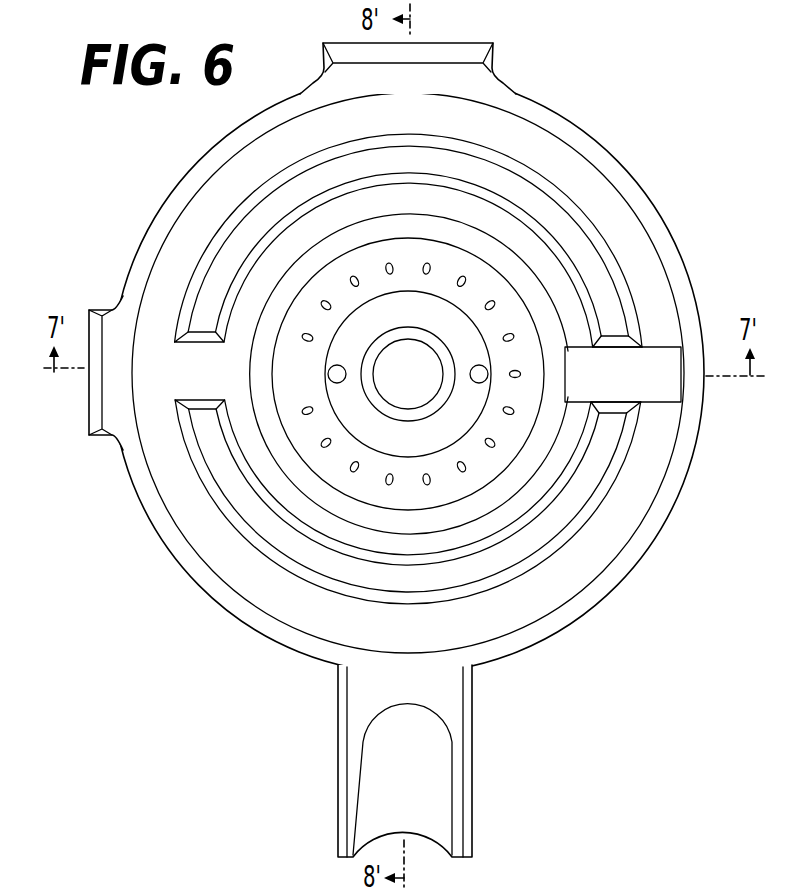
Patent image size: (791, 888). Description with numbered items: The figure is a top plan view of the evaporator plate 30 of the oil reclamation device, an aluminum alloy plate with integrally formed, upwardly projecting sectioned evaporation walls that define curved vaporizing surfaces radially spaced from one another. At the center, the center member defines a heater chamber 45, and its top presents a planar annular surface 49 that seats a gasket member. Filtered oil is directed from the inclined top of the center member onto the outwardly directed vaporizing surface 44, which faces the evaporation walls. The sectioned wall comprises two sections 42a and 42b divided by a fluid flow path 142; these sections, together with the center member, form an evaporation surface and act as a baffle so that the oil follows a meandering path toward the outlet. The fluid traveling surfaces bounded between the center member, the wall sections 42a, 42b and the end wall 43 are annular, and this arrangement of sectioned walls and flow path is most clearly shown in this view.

The evaporator plate 30 is at (696, 273).
The sectioned wall section 42a is at (525, 193).
The sectioned wall section 42b is at (555, 548).
The fluid flow path 142 is at (212, 385).
The vaporizing surface 44 is at (538, 302).
The end wall 43 is at (363, 488).
The planar annular surface 49 is at (360, 423).
The heater chamber 45 is at (420, 388).